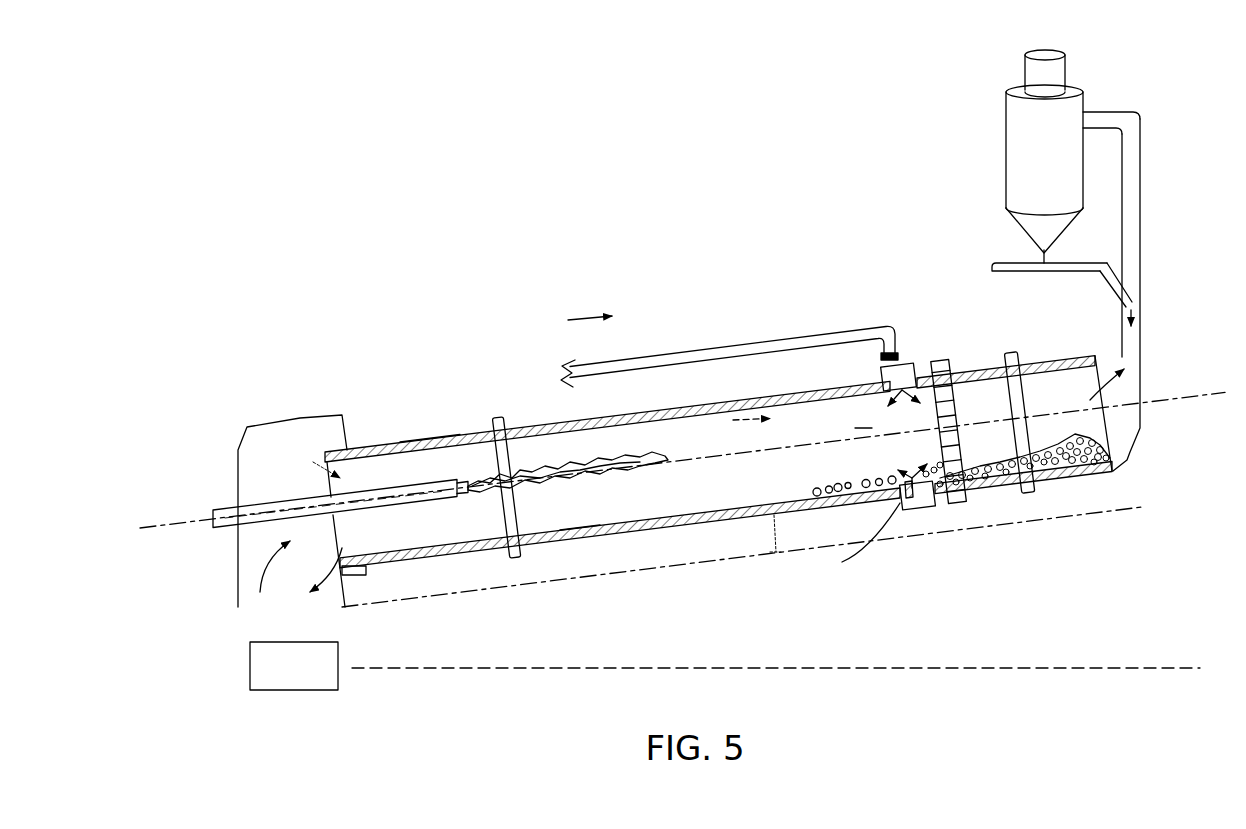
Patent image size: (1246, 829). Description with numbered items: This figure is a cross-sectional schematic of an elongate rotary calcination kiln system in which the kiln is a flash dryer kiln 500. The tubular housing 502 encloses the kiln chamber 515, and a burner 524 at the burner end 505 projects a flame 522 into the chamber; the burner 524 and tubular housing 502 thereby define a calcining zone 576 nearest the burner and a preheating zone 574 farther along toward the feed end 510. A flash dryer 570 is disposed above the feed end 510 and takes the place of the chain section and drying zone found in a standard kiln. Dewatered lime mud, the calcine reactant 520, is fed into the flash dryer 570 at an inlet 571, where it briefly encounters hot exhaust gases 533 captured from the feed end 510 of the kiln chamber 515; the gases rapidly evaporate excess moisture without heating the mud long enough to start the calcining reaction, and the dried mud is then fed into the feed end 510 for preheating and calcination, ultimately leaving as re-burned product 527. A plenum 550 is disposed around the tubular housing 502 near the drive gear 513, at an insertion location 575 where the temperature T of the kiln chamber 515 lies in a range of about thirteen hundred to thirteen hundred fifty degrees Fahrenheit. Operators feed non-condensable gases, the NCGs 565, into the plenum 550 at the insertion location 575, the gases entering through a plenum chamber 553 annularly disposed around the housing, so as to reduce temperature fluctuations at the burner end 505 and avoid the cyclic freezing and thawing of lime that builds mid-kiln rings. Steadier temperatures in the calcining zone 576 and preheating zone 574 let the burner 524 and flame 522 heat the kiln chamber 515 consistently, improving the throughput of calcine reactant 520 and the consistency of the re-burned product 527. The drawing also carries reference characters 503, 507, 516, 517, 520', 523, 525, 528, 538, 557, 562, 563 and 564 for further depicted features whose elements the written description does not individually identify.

The flash dryer kiln 500 is at (348, 292).
The tubular housing 502 is at (718, 449).
The inner liner 503 is at (475, 436).
The burner end 505 is at (306, 460).
The tube wall 507 is at (437, 436).
The feed end 510 is at (1150, 305).
The drive gear 513 is at (940, 358).
The kiln chamber 515 is at (571, 515).
The inlet housing 516 is at (323, 413).
The support ring 517 is at (500, 418).
The calcine reactant 520 is at (1060, 183).
The feed conduit 520' is at (1094, 219).
The flame 522 is at (615, 455).
The pellets 523 is at (822, 480).
The burner 524 is at (220, 509).
The gas flow direction 525 is at (750, 398).
The re-burned product 527 is at (345, 578).
The air inlet flow 528 is at (253, 584).
The exhaust gases 533 is at (1135, 382).
The controller 538 is at (278, 678).
The plenum 550 is at (869, 331).
The plenum chamber 553 is at (842, 562).
The nozzle block 557 is at (880, 380).
The supply pipe 562 is at (681, 345).
The valve 563 is at (886, 350).
The lower port block 564 is at (925, 510).
The NCGs 565 is at (583, 320).
The flash dryer 570 is at (1022, 165).
The inlet 571 is at (1068, 64).
The preheating zone 574 is at (872, 542).
The insertion location 575 is at (908, 512).
The calcining zone 576 is at (493, 600).